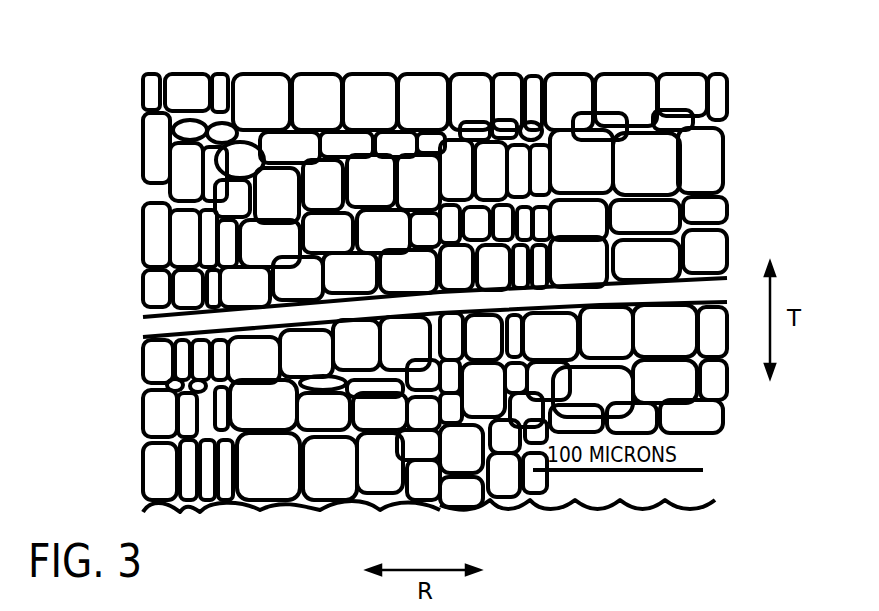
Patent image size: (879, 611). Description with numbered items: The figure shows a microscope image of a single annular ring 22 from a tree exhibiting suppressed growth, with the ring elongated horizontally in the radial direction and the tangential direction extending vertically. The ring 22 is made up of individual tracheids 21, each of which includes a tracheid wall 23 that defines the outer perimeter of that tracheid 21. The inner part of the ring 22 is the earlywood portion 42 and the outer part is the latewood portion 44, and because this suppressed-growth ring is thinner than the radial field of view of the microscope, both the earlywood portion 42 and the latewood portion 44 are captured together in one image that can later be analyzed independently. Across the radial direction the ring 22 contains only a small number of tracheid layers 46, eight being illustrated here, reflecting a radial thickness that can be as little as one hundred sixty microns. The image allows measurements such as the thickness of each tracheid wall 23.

The tracheid 21 is at (231, 102).
The annular ring 22 is at (535, 65).
The tracheid wall 23 is at (205, 203).
The earlywood portion 42 is at (457, 528).
The latewood portion 44 is at (560, 528).
The tracheid layers 46 is at (740, 257).